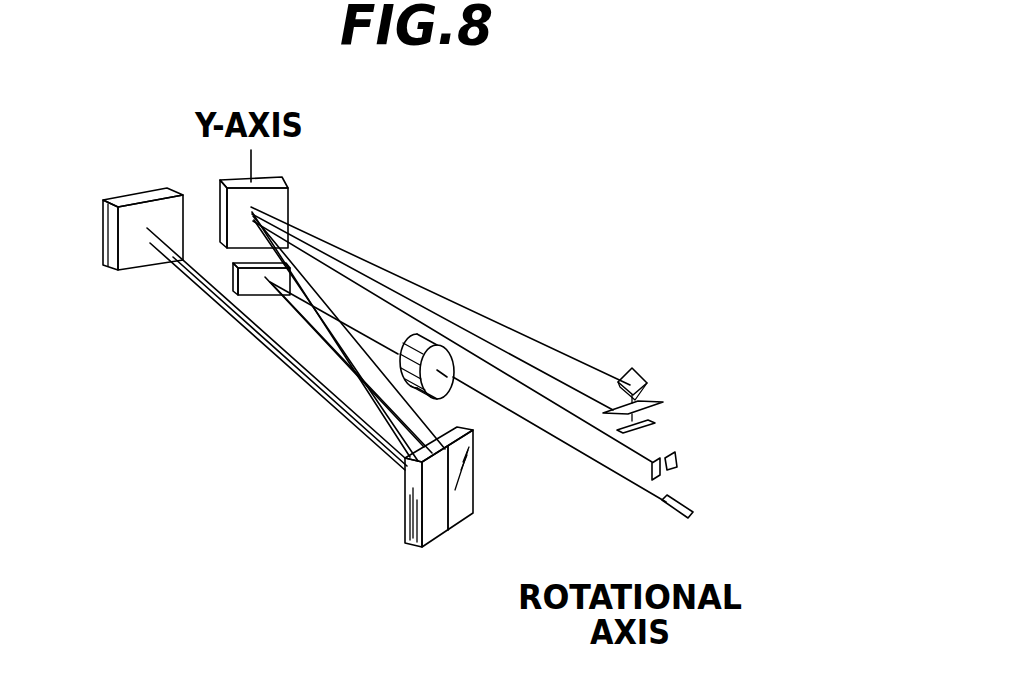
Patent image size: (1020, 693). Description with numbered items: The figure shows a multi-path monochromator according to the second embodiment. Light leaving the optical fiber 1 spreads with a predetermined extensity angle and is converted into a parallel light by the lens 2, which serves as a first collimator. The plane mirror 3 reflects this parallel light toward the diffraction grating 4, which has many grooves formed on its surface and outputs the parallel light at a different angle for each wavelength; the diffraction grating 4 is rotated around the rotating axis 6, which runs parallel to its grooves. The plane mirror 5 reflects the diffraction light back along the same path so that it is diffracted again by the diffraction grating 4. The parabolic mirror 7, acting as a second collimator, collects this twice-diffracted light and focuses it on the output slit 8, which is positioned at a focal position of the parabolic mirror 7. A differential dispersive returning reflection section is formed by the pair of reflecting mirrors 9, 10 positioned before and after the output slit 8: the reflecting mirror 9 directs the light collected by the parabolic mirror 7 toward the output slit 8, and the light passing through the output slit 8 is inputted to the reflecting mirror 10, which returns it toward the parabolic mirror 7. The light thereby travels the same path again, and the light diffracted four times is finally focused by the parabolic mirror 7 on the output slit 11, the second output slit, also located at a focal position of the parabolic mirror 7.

The optical fiber 1 is at (670, 510).
The lens 2 is at (440, 373).
The plane mirror 3 is at (263, 295).
The diffraction grating 4 is at (475, 495).
The plane mirror 5 is at (104, 214).
The rotating axis 6 is at (455, 520).
The parabolic mirror 7 is at (288, 205).
The output slit 8 is at (657, 395).
The reflecting mirror 9 is at (657, 423).
The reflecting mirror 10 is at (625, 377).
The output slit 11 is at (677, 470).